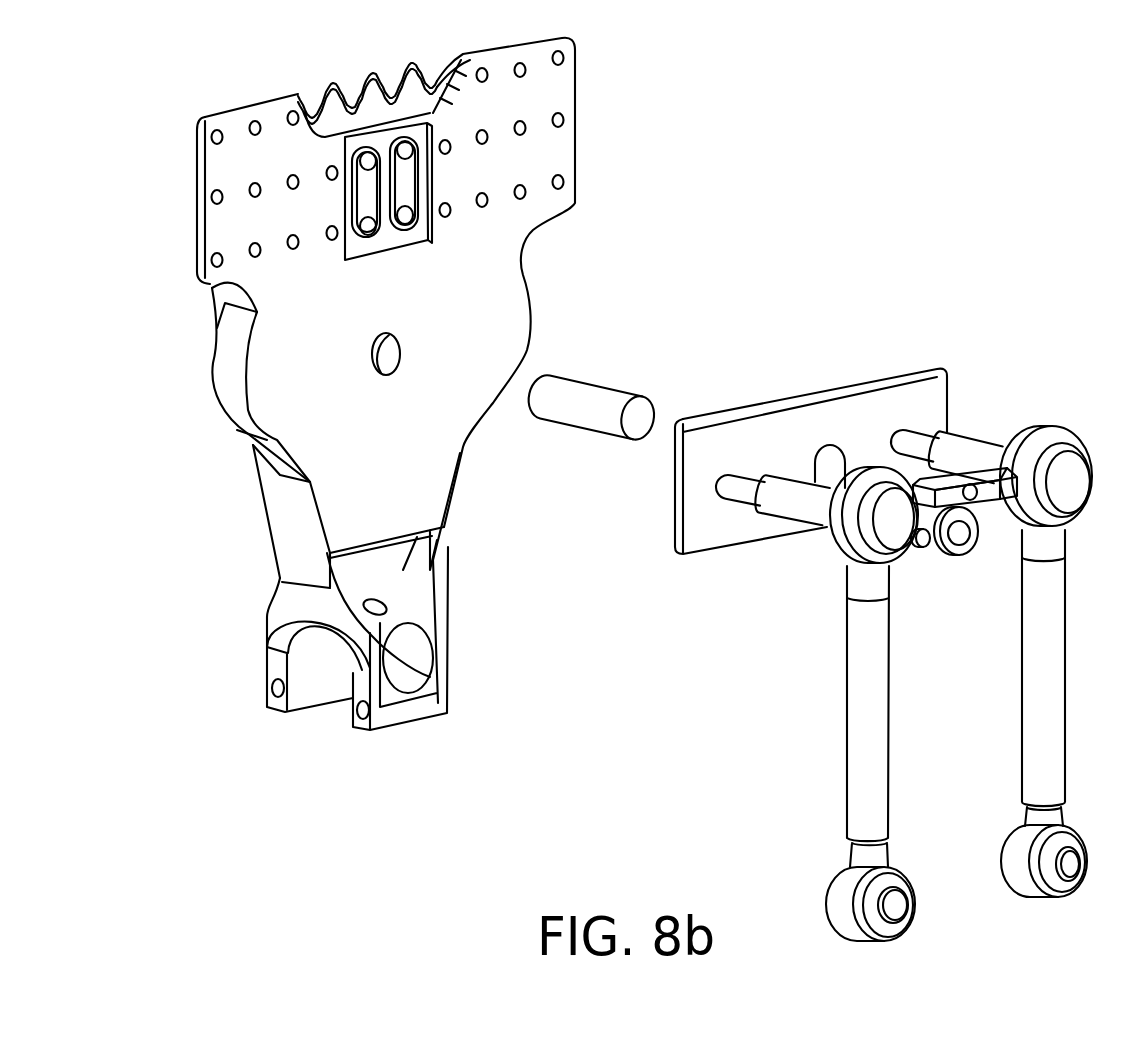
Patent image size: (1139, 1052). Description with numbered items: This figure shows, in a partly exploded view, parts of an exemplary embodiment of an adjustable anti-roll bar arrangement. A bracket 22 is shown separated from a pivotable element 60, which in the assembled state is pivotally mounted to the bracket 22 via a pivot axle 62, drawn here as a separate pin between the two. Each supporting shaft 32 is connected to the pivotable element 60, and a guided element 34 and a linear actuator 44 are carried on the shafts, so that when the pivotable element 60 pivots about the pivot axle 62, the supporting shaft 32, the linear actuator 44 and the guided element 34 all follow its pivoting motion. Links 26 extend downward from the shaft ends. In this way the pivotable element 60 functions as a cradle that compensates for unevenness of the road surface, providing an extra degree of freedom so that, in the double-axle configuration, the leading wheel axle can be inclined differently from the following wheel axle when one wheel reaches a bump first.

The bracket 22 is at (543, 96).
The link rod 26 is at (1043, 645).
The supporting shaft 32 is at (795, 498).
The guided element 34 is at (975, 462).
The linear actuator 44 is at (977, 543).
The pivotable element 60 is at (713, 510).
The pivot axle 62 is at (590, 407).